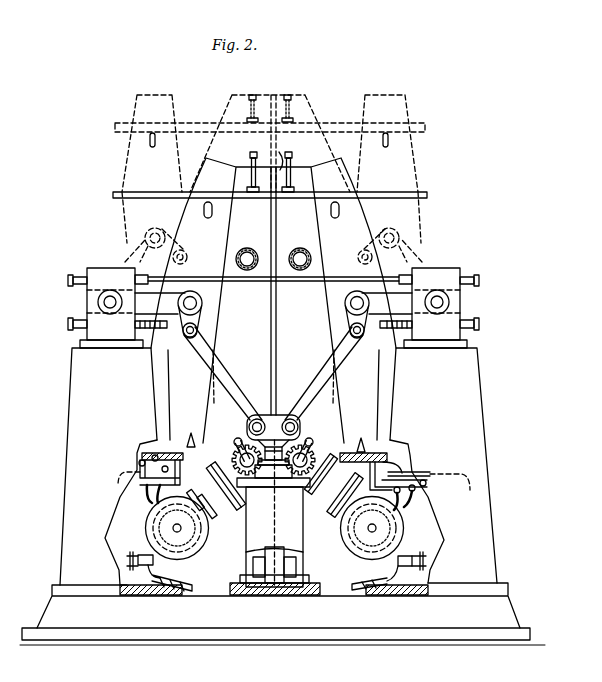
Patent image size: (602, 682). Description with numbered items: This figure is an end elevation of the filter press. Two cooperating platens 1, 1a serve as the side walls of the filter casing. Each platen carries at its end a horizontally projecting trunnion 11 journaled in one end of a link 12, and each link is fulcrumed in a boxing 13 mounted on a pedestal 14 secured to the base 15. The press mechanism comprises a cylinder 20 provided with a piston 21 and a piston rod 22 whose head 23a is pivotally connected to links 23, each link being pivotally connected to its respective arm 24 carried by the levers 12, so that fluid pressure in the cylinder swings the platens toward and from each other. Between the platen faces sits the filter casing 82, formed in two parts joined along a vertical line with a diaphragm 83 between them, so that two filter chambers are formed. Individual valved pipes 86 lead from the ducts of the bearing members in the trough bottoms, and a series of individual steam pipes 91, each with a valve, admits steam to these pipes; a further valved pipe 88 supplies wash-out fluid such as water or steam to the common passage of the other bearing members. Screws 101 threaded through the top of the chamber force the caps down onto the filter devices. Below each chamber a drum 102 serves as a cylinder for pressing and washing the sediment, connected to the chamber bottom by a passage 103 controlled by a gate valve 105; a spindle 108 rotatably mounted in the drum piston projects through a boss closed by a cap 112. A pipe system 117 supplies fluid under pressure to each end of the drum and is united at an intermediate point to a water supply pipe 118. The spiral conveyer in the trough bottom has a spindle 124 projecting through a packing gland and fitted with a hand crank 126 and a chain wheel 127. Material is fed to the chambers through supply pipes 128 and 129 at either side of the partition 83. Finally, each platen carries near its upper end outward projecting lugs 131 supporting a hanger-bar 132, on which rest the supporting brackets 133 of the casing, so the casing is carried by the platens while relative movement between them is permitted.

The platen 1 is at (146, 467).
The platen 1a is at (400, 466).
The trunnion 11 is at (202, 305).
The link 12 is at (273, 303).
The boxing 13 is at (273, 308).
The pedestal 14 is at (278, 466).
The base 15 is at (282, 614).
The cylinder 20 is at (273, 513).
The piston 21 is at (305, 562).
The piston rod 22 is at (246, 562).
The link 23 is at (232, 390).
The head 23a is at (283, 415).
The arm 24 is at (200, 322).
The filter casing 82 is at (273, 300).
The diaphragm 83 is at (270, 305).
The pipe 86 is at (190, 440).
The pipe 88 is at (142, 458).
The steam pipe 91 is at (148, 503).
The screw 101 is at (250, 155).
The drum 102 is at (195, 540).
The passage 103 is at (213, 470).
The gate valve 105 is at (205, 514).
The spindle 108 is at (350, 580).
The cap 112 is at (178, 531).
The pipe system 117 is at (145, 572).
The water supply pipe 118 is at (190, 590).
The spindle 124 is at (238, 438).
The hand crank 126 is at (236, 452).
The chain wheel 127 is at (234, 443).
The supply pipe 128 is at (245, 249).
The supply pipe 129 is at (308, 252).
The lug 131 is at (206, 218).
The hanger-bar 132 is at (115, 195).
The supporting bracket 133 is at (256, 172).